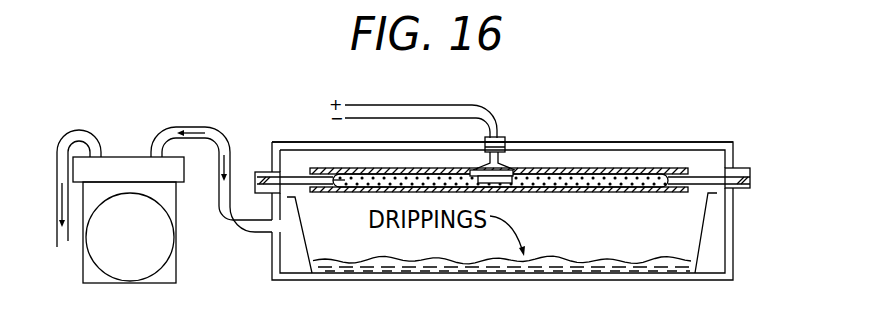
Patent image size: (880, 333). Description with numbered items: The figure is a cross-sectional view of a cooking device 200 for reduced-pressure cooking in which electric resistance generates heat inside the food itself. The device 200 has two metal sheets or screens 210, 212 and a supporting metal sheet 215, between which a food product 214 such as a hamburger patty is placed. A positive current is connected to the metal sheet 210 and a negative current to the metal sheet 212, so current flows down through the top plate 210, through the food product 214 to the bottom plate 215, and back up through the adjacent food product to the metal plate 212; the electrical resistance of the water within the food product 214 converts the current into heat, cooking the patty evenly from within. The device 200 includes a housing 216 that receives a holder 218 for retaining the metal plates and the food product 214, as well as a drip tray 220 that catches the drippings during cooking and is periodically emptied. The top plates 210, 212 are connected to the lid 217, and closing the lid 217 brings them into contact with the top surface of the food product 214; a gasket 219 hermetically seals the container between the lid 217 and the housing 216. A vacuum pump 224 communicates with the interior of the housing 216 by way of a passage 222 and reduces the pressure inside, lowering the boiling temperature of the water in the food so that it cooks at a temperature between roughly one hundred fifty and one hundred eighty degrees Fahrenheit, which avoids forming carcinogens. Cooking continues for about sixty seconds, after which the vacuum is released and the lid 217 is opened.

The cooking device 200 is at (760, 141).
The metal sheet 210 is at (638, 167).
The metal sheet 212 is at (333, 177).
The food product 214 is at (557, 166).
The supporting metal sheet 215 is at (673, 175).
The housing 216 is at (733, 220).
The lid 217 is at (612, 134).
The holder 218 is at (702, 184).
The gasket 219 is at (752, 175).
The drip tray 220 is at (697, 247).
The passage 222 is at (236, 233).
The vacuum pump 224 is at (85, 250).